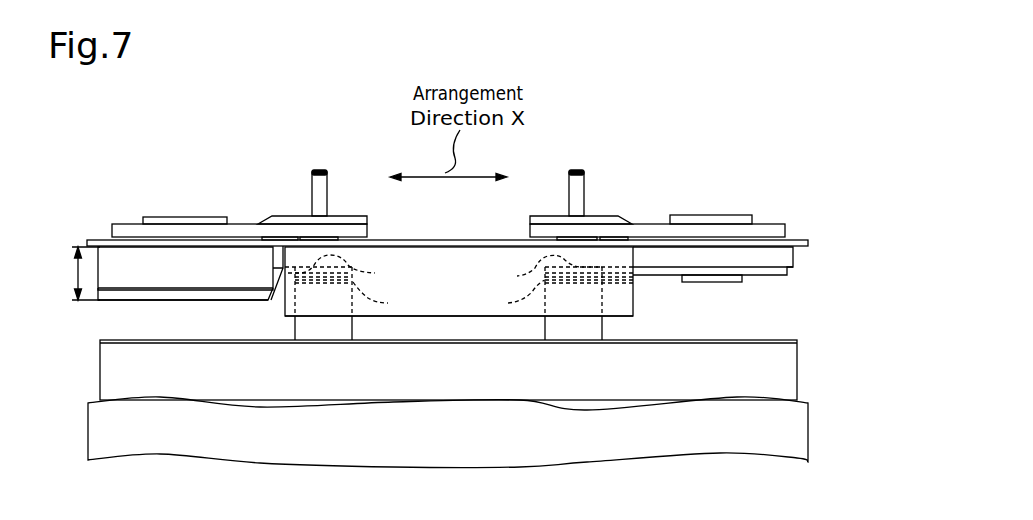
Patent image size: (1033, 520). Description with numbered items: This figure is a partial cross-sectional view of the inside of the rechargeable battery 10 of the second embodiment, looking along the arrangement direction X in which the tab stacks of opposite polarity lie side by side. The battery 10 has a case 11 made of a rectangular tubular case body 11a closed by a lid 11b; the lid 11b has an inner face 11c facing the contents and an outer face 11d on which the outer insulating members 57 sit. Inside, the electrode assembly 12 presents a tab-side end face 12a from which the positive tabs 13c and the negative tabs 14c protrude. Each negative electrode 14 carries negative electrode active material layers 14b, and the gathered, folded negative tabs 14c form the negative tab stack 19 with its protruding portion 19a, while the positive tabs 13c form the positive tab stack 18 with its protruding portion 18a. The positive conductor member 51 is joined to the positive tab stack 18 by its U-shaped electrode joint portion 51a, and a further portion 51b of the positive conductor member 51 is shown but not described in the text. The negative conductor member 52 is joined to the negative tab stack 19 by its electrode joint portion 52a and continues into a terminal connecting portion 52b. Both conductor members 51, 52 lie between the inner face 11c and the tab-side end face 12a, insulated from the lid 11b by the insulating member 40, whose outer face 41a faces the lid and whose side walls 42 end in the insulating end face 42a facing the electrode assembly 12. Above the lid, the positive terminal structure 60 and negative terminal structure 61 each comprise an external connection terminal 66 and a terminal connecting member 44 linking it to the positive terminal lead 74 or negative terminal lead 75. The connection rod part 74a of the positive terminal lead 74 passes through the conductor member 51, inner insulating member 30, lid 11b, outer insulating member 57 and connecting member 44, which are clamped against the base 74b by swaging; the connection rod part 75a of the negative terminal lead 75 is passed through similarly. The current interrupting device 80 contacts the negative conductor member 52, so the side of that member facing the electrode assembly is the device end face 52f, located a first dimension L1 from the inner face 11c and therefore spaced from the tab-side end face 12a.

The rechargeable battery 10 is at (740, 140).
The case 11 is at (840, 300).
The case body 11a is at (810, 423).
The lid 11b is at (808, 247).
The inner face of the lid 11c is at (470, 253).
The outer face of the lid 11d is at (418, 242).
The electrode assembly 12 is at (222, 405).
The tab-side end face 12a is at (383, 337).
The positive tab 13c is at (571, 330).
The negative electrode 14 is at (108, 380).
The negative electrode active material layer 14b is at (290, 398).
The negative tab 14c is at (325, 333).
The positive tab stack 18 is at (606, 330).
The protruding portion of positive tab stack 18a is at (507, 295).
The negative tab stack 19 is at (291, 330).
The protruding portion of negative tab stack 19a is at (390, 296).
The inner insulating member 30 is at (107, 253).
The insulating member 40 is at (380, 256).
The outer face 41a is at (448, 243).
The side wall 42 is at (467, 316).
The insulating end face 42a is at (500, 317).
The terminal connecting member 44 is at (282, 215).
The positive conductor member 51 is at (650, 276).
The electrode joint portion 51a is at (539, 269).
The right holder lower portion 51b is at (755, 276).
The negative conductor member 52 is at (108, 298).
The electrode joint portion 52a is at (353, 269).
The terminal connecting portion 52b is at (172, 300).
The device end face 52f is at (198, 300).
The outer insulating member 57 is at (128, 224).
The positive terminal structure 60 is at (600, 158).
The negative terminal structure 61 is at (397, 145).
The external connection terminal 66 is at (319, 171).
The positive terminal lead 74 is at (711, 196).
The connection rod part 74a is at (687, 215).
The base 74b is at (695, 283).
The negative terminal lead 75 is at (182, 196).
The connection rod part 75a is at (198, 217).
The current interrupting device 80 is at (129, 304).
The first dimension L1 is at (78, 270).